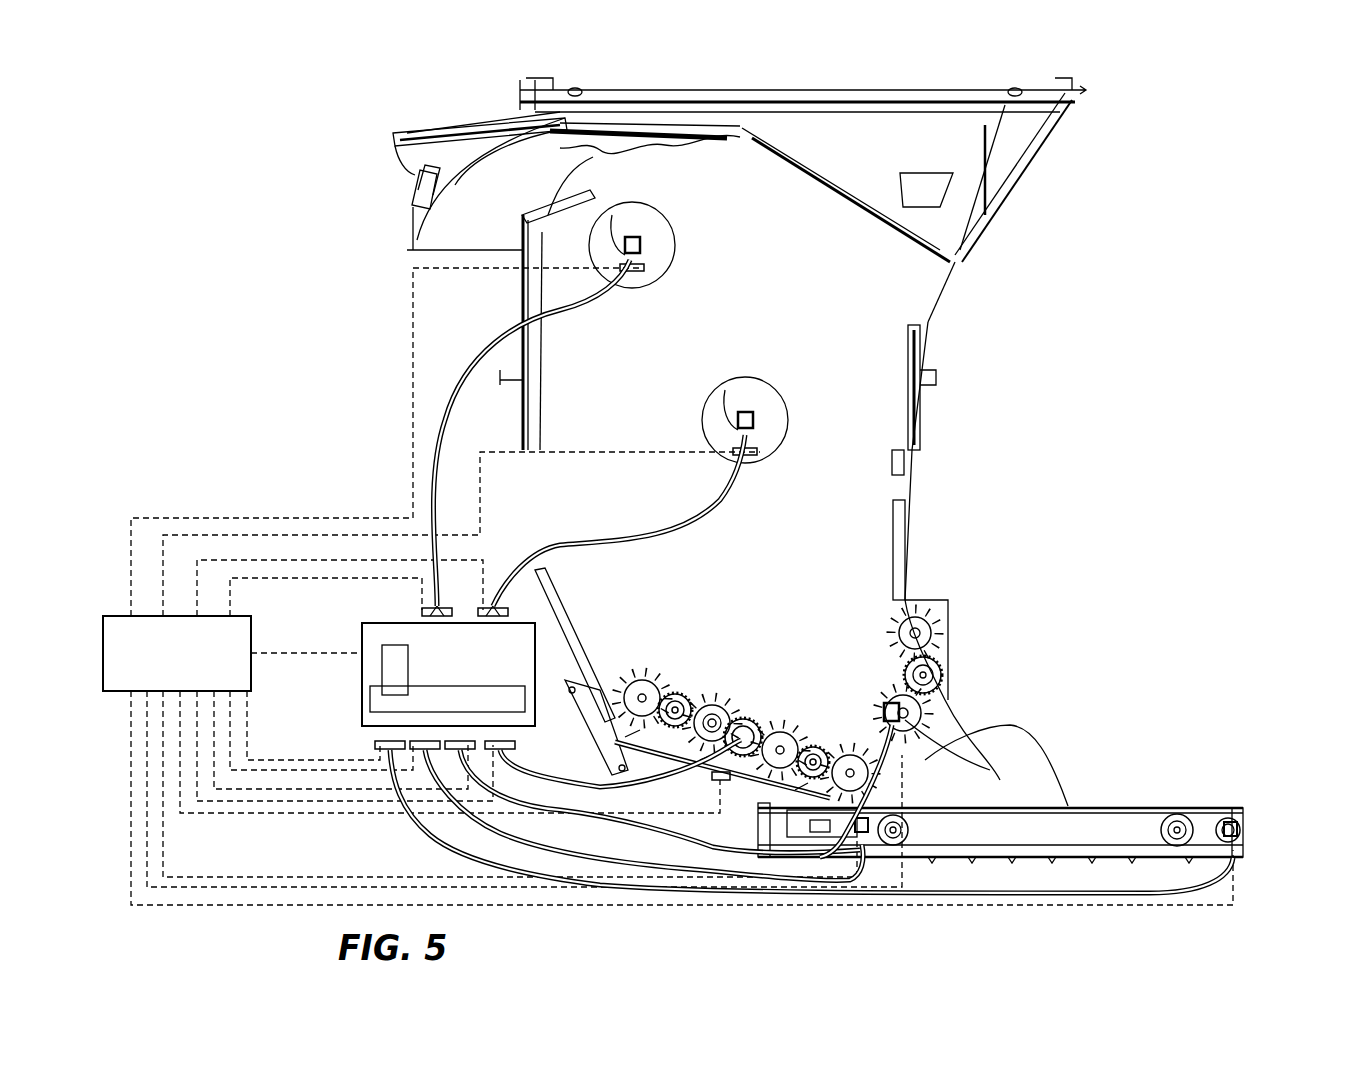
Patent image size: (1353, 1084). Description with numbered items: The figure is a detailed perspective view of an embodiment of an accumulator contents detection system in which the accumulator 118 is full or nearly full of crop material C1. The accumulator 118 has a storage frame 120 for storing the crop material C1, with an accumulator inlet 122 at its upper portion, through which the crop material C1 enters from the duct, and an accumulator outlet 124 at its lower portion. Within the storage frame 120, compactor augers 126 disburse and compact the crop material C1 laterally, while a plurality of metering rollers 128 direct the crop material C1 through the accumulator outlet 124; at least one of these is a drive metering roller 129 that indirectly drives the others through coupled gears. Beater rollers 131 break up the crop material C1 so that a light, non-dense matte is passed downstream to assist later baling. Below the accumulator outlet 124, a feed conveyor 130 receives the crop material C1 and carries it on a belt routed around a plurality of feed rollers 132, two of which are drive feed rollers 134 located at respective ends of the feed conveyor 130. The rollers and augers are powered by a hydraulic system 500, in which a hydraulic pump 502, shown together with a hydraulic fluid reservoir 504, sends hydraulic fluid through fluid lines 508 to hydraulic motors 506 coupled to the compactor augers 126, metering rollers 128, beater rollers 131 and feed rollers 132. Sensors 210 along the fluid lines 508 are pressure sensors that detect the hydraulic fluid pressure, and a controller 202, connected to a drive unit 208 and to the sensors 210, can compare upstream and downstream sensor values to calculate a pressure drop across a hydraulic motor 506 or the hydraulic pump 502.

The accumulator 118 is at (958, 78).
The storage frame 120 is at (868, 135).
The accumulator inlet 122 is at (585, 160).
The accumulator outlet 124 is at (920, 757).
The compactor auger 126 is at (655, 212).
The metering roller 128 is at (652, 685).
The drive metering roller 129 is at (712, 723).
The feed conveyor 130 is at (1100, 795).
The beater roller 131 is at (910, 712).
The feed roller 132 is at (1165, 818).
The drive feed roller 134 is at (1228, 830).
The controller 202 is at (191, 666).
The drive unit 208 is at (385, 660).
The sensor 210 is at (640, 268).
The hydraulic system 500 is at (352, 633).
The hydraulic pump 502 is at (395, 670).
The hydraulic fluid reservoir 504 is at (458, 695).
The hydraulic motor 506 is at (642, 245).
The fluid line 508 is at (473, 392).
The crop material C1 is at (832, 545).